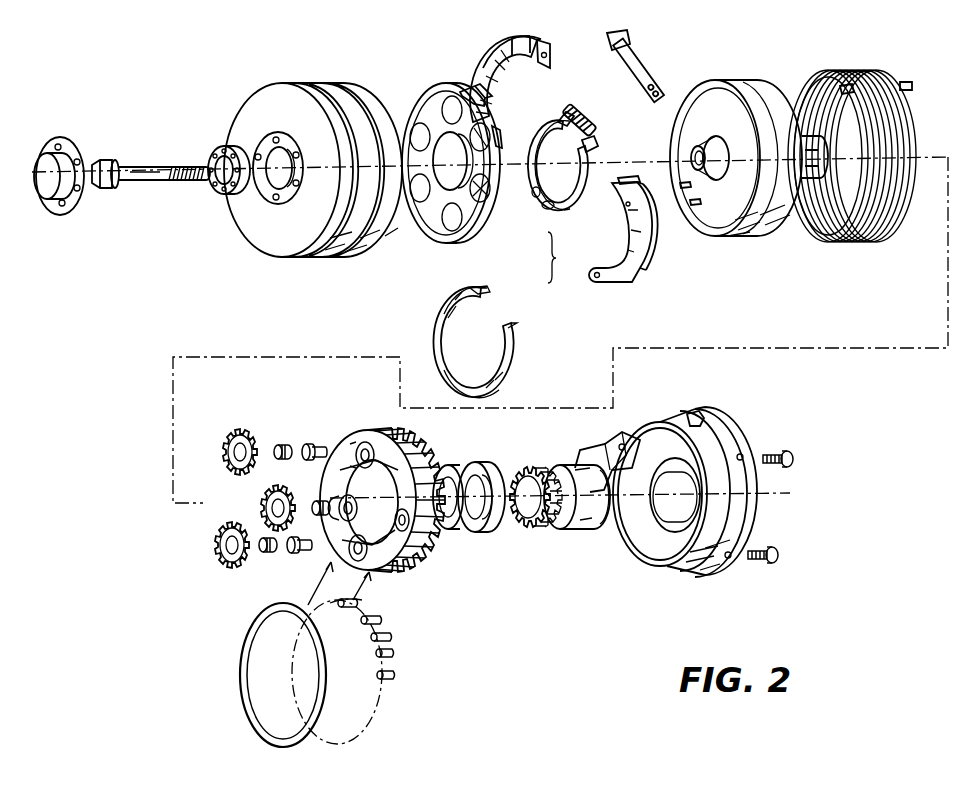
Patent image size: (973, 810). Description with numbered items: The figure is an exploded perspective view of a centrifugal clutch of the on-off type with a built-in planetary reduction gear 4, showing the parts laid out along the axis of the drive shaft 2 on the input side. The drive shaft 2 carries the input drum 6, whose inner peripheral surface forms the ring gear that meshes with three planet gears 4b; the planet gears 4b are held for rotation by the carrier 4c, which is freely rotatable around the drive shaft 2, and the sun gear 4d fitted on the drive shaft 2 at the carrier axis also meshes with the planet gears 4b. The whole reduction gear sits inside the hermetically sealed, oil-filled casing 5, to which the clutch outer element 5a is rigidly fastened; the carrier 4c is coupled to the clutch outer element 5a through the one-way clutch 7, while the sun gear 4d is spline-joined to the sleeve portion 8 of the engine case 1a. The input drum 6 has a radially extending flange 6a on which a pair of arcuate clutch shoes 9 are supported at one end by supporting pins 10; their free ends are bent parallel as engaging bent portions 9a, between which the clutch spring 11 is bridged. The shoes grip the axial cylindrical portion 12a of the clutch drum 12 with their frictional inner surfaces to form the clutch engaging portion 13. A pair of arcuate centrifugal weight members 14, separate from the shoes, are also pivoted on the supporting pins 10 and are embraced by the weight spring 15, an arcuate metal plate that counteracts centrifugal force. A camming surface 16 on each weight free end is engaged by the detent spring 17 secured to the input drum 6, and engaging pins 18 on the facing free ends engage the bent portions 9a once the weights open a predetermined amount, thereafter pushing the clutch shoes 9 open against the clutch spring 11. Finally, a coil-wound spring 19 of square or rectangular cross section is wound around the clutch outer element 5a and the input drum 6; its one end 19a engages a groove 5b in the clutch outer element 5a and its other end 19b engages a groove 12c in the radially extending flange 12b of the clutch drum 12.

The case 1a is at (597, 450).
The drive shaft 2 is at (820, 150).
The planetary reduction gear 4 is at (287, 473).
The planet gears 4b is at (235, 530).
The carrier 4c is at (388, 443).
The sun gear 4d is at (520, 528).
The casing 5 is at (355, 82).
The clutch outer element 5a is at (703, 472).
The groove 5b is at (703, 412).
The input drum 6 is at (736, 157).
The flange 6a is at (729, 218).
The one-way clutch 7 is at (425, 557).
The sleeve portion 8 is at (590, 500).
The clutch shoes 9 is at (531, 180).
The engaging bent portions 9a is at (565, 117).
The supporting pins 10 is at (696, 208).
The clutch spring 11 is at (588, 112).
The clutch drum 12 is at (451, 155).
The axial cylindrical portion 12a is at (443, 185).
The flange 12b is at (432, 112).
The groove 12c is at (470, 98).
The clutch engaging portion 13 is at (566, 257).
The centrifugal weight members 14 is at (499, 40).
The weight spring 15 is at (519, 360).
The camming surface 16 is at (545, 56).
The detent spring 17 is at (648, 73).
The engaging pins 18 is at (535, 37).
The coil-wound spring 19 is at (857, 137).
The one end 19a is at (903, 82).
The other end 19b is at (839, 72).